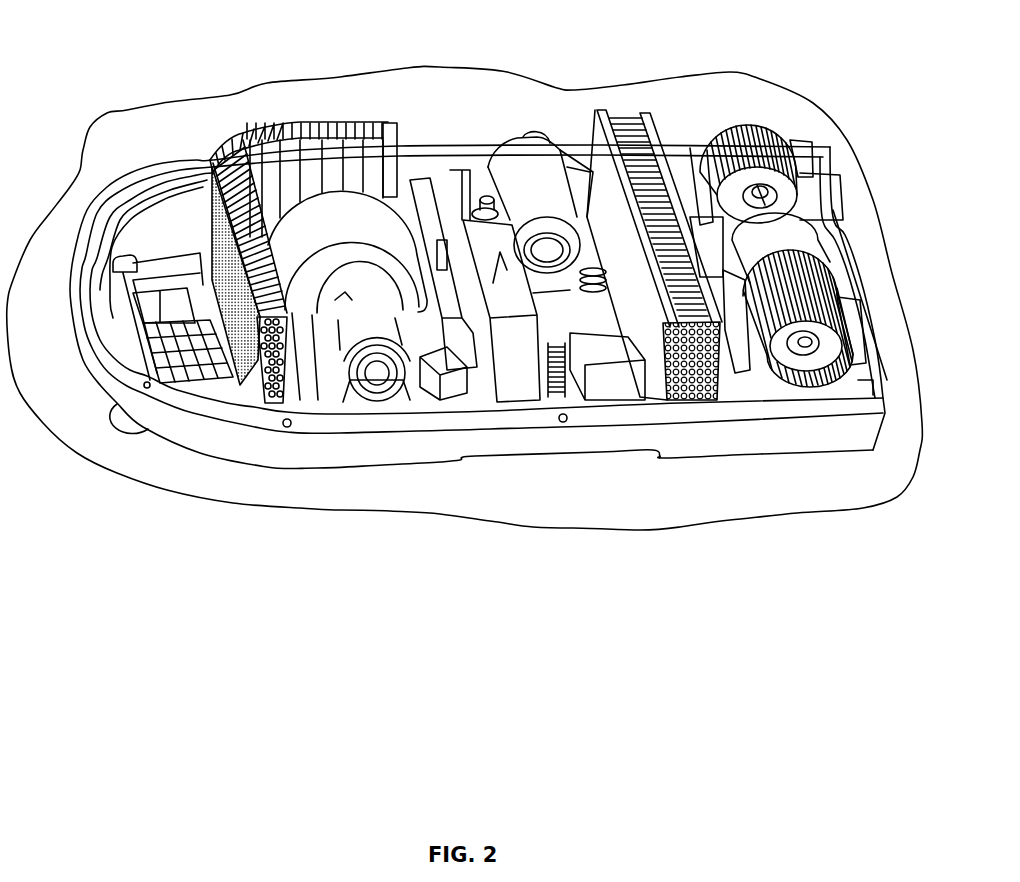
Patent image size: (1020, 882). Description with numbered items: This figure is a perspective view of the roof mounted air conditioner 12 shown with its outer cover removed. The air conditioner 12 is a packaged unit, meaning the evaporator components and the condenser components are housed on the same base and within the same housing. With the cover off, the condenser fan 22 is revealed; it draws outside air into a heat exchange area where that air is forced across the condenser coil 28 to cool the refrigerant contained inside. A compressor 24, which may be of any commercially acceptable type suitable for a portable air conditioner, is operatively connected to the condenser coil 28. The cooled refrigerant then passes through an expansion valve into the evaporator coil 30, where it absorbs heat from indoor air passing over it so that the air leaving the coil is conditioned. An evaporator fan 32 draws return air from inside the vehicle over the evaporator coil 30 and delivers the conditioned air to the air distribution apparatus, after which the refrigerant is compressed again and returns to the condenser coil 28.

The air conditioner 12 is at (152, 167).
The condenser fan 22 is at (773, 233).
The compressor 24 is at (528, 167).
The condenser coil 28 is at (642, 117).
The evaporator coil 30 is at (293, 127).
The evaporator fan 32 is at (347, 220).